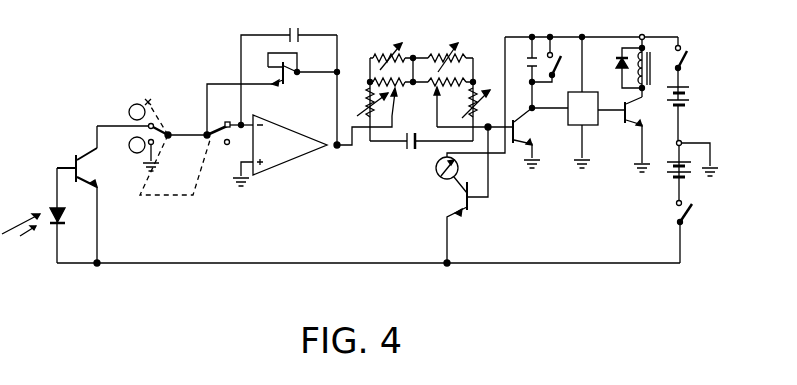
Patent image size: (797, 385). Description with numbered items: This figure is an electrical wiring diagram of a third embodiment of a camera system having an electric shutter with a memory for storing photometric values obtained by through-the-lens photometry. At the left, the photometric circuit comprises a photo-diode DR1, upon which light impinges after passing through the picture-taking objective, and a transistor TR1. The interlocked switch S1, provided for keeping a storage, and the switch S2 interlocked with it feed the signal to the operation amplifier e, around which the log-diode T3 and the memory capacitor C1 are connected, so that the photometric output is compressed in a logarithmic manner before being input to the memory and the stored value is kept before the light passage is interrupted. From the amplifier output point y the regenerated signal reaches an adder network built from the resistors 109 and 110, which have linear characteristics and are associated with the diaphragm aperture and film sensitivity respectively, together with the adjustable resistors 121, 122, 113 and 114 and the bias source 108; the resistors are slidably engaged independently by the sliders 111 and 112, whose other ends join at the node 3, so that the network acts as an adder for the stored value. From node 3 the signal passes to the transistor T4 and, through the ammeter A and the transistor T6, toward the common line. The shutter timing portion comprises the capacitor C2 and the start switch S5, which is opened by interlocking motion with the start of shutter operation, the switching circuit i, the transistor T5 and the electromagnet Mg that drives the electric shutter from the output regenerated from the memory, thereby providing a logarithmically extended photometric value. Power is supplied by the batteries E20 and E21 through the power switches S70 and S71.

The transistor TR1 is at (77, 159).
The photo-diode DR1 is at (33, 212).
The interlocked switch S1 is at (169, 147).
The switch S2 is at (219, 143).
The memory capacitor C1 is at (289, 66).
The log-diode T3 is at (273, 90).
The operation amplifier e is at (289, 154).
The output terminal y is at (350, 148).
The adjustable resistor 121 is at (388, 49).
The adjustable resistor 122 is at (446, 51).
The resistor having linear characteristics 109 is at (395, 74).
The resistor having linear characteristics 110 is at (450, 75).
The adjustable resistor 113 is at (365, 102).
The adjustable resistor 114 is at (485, 103).
The slider 111 is at (398, 107).
The slider 112 is at (463, 107).
The bias source battery 108 is at (421, 153).
The junction point 3 is at (493, 137).
The ammeter A is at (437, 173).
The transistor T6 is at (457, 195).
The capacitor C2 is at (522, 74).
The start switch S5 is at (558, 59).
The transistor T4 is at (534, 138).
The switching circuit i is at (587, 116).
The electromagnet Mg is at (649, 66).
The transistor T5 is at (637, 134).
The power switch S70 is at (698, 62).
The supply battery E20 is at (697, 131).
The supply battery E21 is at (693, 179).
The power switch S71 is at (700, 232).